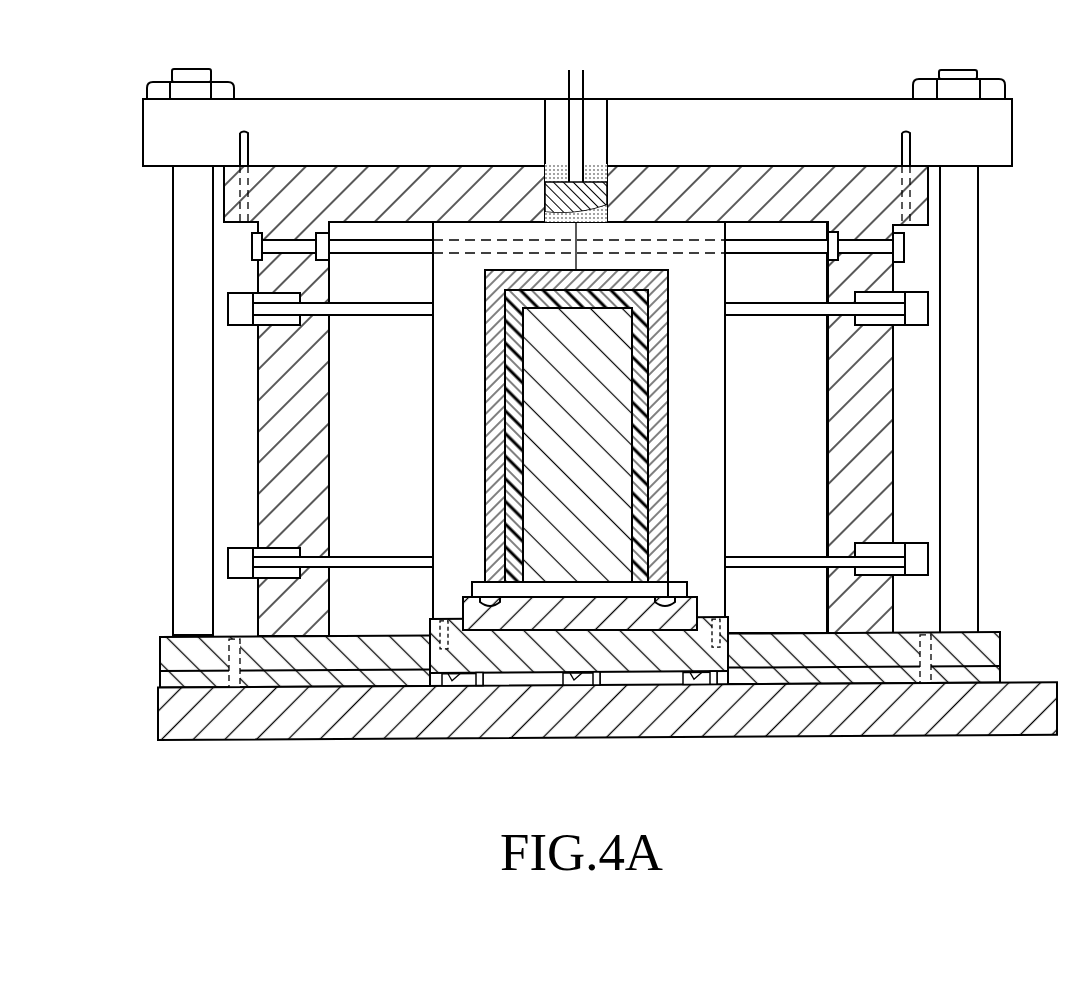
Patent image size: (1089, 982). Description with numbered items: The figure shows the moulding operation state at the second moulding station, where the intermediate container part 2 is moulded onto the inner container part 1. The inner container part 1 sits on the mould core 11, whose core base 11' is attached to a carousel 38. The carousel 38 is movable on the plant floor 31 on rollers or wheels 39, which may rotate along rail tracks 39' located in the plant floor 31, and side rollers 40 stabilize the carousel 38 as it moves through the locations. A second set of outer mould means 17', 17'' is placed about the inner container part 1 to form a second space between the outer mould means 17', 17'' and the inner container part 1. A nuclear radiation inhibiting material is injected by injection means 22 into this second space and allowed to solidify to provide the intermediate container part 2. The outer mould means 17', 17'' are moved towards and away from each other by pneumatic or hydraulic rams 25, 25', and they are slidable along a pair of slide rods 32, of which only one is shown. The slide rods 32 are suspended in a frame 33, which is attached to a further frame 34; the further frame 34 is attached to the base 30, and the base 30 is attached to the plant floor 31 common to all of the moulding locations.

The inner container part 1 is at (640, 330).
The intermediate container part 2 is at (663, 507).
The mould core 11 is at (646, 445).
The core base 11' is at (731, 600).
The outer mould means 17' is at (383, 429).
The outer mould means 17'' is at (640, 426).
The injection means 22 is at (618, 143).
The pneumatic or hydraulic ram 25 is at (330, 435).
The pneumatic or hydraulic ram 25' is at (829, 433).
The base 30 is at (178, 653).
The plant floor 31 is at (283, 720).
The slide rods 32 is at (347, 248).
The frame 33 is at (833, 182).
The further frame 34 is at (987, 128).
The carousel 38 is at (482, 640).
The rollers or wheels 39 is at (573, 726).
The rail tracks 39' is at (608, 735).
The side rollers 40 is at (425, 632).